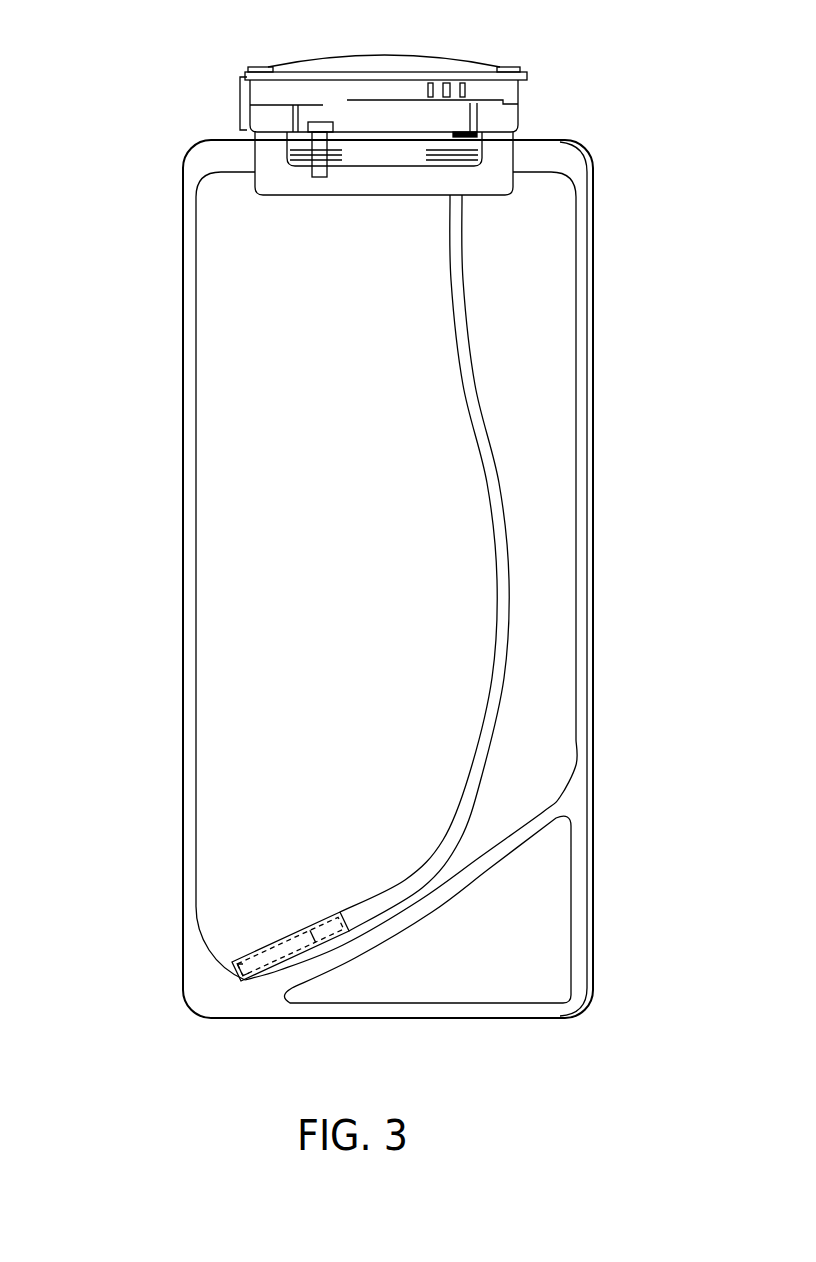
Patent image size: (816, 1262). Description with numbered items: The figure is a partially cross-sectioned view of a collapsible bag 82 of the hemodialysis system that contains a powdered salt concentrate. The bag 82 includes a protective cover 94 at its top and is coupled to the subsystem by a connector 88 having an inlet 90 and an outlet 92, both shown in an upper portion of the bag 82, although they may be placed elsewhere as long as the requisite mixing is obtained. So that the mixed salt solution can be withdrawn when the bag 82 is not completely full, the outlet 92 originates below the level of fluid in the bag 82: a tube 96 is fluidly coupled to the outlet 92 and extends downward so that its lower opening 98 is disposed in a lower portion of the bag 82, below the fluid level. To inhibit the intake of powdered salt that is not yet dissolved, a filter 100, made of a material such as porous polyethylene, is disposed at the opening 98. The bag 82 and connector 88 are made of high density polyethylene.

The bag 82 is at (612, 460).
The connector 88 is at (240, 100).
The inlet 90 is at (310, 128).
The outlet 92 is at (453, 135).
The protective cover 94 is at (270, 65).
The tube 96 is at (497, 558).
The lower opening 98 is at (232, 972).
The filter 100 is at (273, 945).